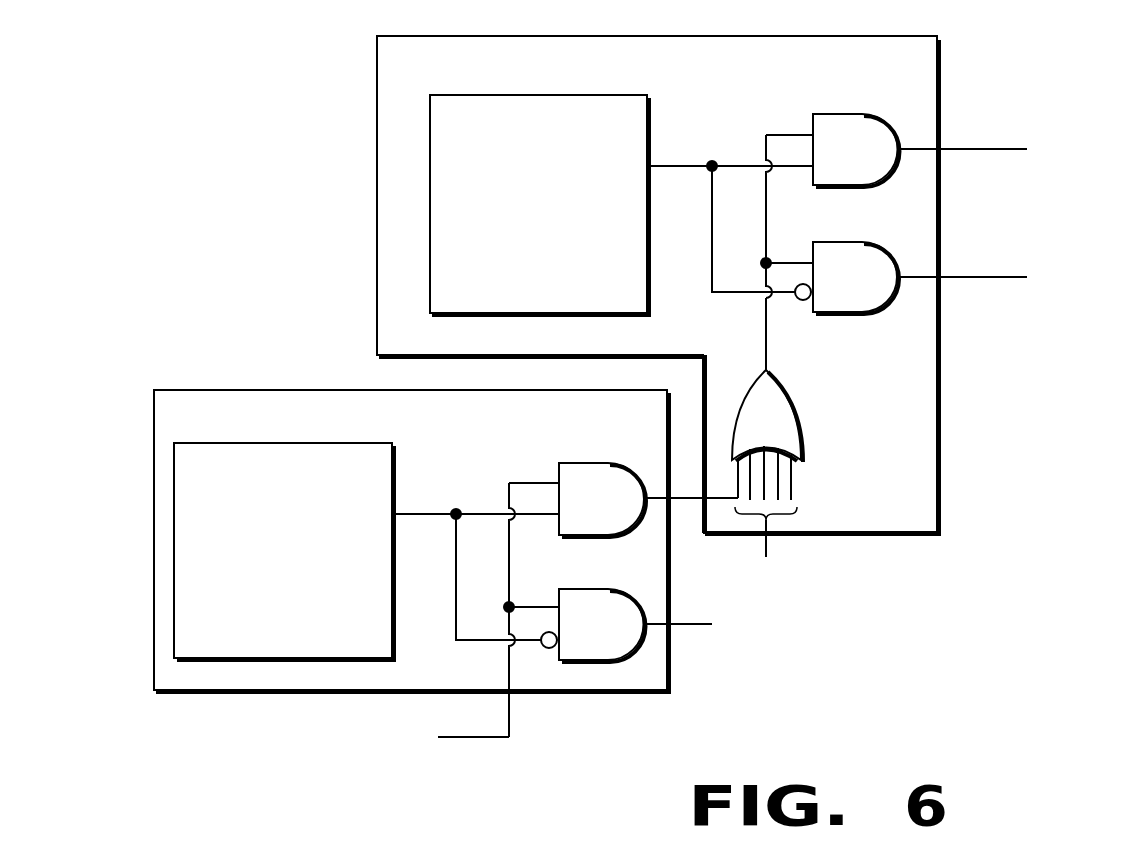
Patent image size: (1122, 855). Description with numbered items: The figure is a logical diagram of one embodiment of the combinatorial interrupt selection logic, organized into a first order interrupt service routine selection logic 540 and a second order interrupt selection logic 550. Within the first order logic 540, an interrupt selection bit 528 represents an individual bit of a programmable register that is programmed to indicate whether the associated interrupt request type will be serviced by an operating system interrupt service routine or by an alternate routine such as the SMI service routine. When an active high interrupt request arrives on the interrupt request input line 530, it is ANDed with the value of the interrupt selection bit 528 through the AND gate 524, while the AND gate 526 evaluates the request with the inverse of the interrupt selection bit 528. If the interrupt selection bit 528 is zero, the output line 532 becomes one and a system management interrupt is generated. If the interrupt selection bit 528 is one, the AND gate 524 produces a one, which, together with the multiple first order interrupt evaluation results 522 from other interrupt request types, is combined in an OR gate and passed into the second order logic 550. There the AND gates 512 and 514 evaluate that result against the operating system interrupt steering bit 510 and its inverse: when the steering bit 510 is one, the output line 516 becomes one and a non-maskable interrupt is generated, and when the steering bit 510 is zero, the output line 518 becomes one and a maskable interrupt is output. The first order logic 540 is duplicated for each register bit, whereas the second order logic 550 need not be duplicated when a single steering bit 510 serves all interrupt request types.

The operating system interrupt steering bit 510 is at (539, 205).
The AND gate 512 is at (856, 150).
The AND gate 514 is at (856, 278).
The output line 516 is at (1027, 148).
The output line 518 is at (1027, 274).
The multiple first order interrupt evaluation results 522 is at (767, 549).
The AND gate 524 is at (602, 500).
The AND gate 526 is at (602, 625).
The interrupt selection bit 528 is at (284, 551).
The interrupt request input line 530 is at (462, 740).
The output line 532 is at (690, 626).
The first order interrupt service routine selection logic 540 is at (411, 541).
The second order interrupt selection logic 550 is at (658, 285).